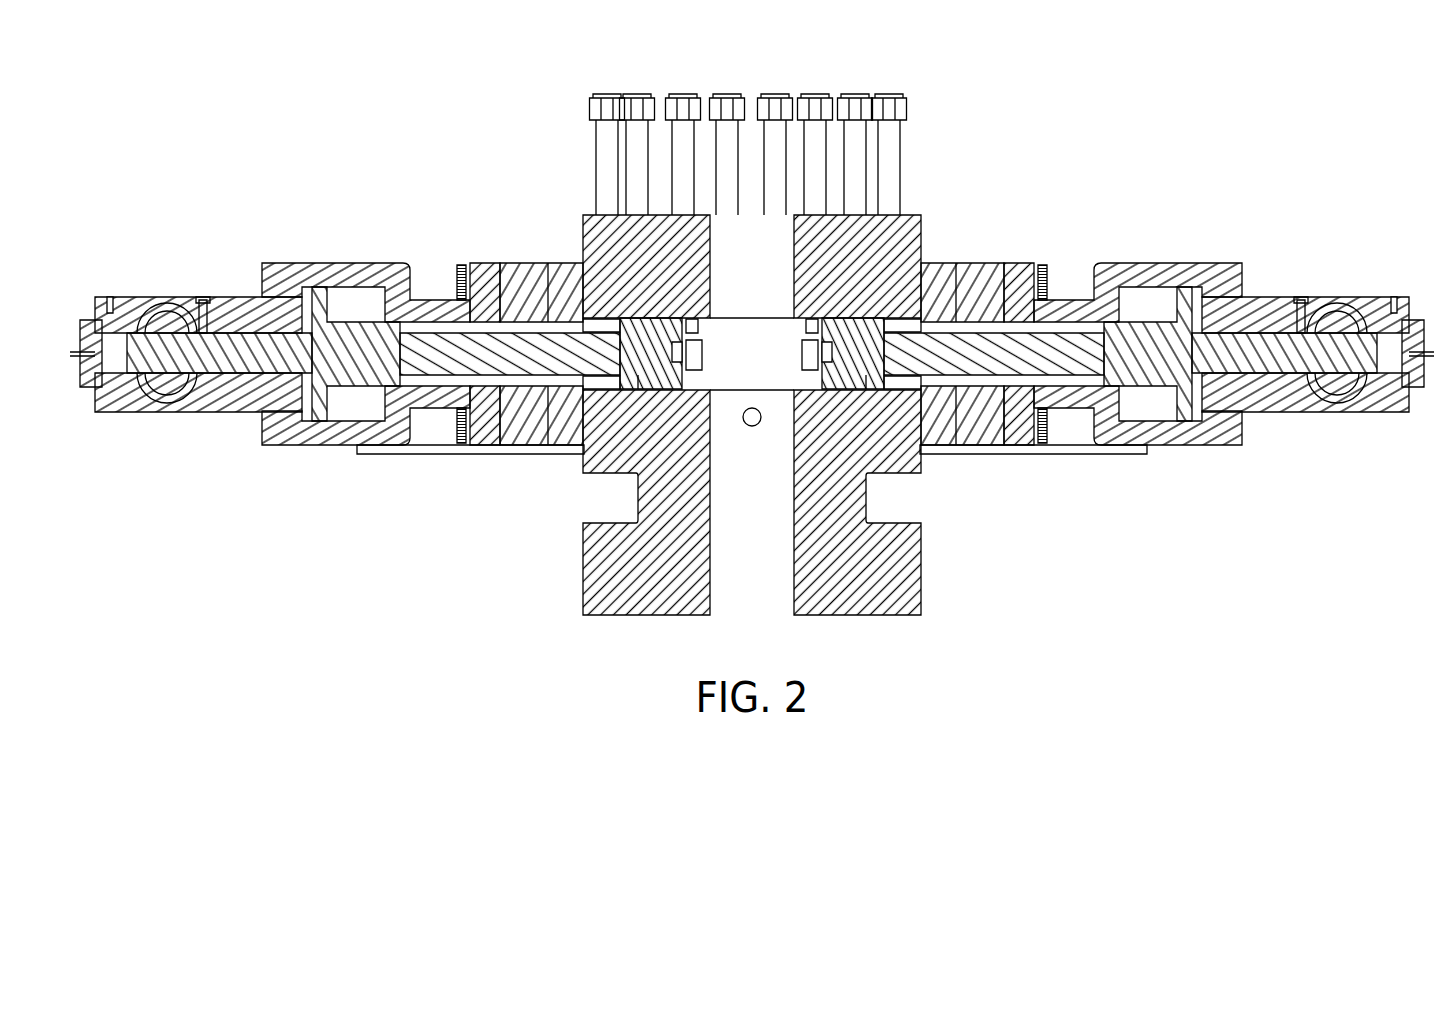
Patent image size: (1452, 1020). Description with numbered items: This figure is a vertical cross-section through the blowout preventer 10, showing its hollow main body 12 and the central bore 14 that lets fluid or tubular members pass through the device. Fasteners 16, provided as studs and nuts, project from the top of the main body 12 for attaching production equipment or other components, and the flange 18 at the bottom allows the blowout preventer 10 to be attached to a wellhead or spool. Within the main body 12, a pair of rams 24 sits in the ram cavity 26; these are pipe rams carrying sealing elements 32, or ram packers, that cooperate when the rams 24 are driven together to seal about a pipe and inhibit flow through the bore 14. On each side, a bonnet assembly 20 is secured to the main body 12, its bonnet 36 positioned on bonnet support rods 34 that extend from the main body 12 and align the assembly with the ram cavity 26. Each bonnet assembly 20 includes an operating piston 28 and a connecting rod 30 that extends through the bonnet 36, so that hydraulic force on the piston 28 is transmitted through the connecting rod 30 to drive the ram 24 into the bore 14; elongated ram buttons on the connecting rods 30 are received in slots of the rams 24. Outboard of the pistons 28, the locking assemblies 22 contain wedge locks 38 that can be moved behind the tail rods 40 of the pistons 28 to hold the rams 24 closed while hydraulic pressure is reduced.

The blowout preventer 10 is at (363, 90).
The main body 12 is at (921, 231).
The bore 14 is at (711, 262).
The fasteners 16 is at (690, 137).
The flange 18 is at (912, 580).
The bonnet assemblies 20 is at (752, 337).
The locking assemblies 22 is at (158, 322).
The rams 24 is at (641, 380).
The ram cavity 26 is at (702, 325).
The pistons 28 is at (322, 420).
The connecting rods 30 is at (488, 352).
The sealing elements 32 is at (814, 342).
The bonnet support rods 34 is at (400, 450).
The bonnets 36 is at (525, 266).
The wedge locks 38 is at (170, 328).
The tail rods 40 is at (228, 360).